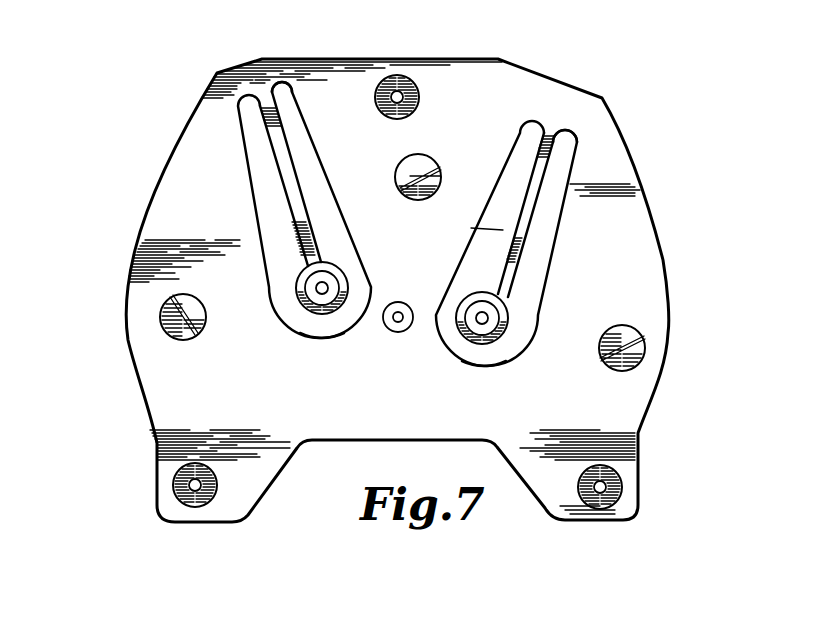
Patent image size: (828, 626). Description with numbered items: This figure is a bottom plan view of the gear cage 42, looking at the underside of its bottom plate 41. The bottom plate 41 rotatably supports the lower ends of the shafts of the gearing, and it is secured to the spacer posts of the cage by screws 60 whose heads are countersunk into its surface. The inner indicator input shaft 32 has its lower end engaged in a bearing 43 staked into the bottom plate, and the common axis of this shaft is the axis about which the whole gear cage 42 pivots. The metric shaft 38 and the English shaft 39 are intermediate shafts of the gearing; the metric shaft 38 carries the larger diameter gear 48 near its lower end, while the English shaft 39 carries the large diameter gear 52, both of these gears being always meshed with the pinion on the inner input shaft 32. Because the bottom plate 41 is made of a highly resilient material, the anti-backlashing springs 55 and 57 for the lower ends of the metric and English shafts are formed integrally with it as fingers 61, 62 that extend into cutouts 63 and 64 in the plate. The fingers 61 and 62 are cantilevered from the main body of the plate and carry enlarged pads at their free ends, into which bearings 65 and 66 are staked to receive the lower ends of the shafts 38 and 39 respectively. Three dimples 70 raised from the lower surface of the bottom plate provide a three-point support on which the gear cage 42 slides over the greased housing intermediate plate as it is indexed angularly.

The bottom plate 41 is at (507, 76).
The gear cage 42 is at (399, 281).
The large diameter gear 52 is at (300, 220).
The larger diameter gear 48 is at (520, 268).
The anti-backlashing spring 57 is at (283, 134).
The anti-backlashing spring 55 is at (548, 175).
The finger 62 is at (312, 222).
The finger 61 is at (507, 263).
The English shaft 39 is at (314, 297).
The metric shaft 38 is at (508, 320).
The bearing 66 is at (328, 281).
The bearing 65 is at (480, 328).
The cutout 64 is at (340, 337).
The cutout 63 is at (507, 352).
The inner indicator input shaft 32 is at (413, 272).
The bearing 43 is at (401, 332).
The screws 60 is at (461, 148).
The dimples 70 is at (421, 98).